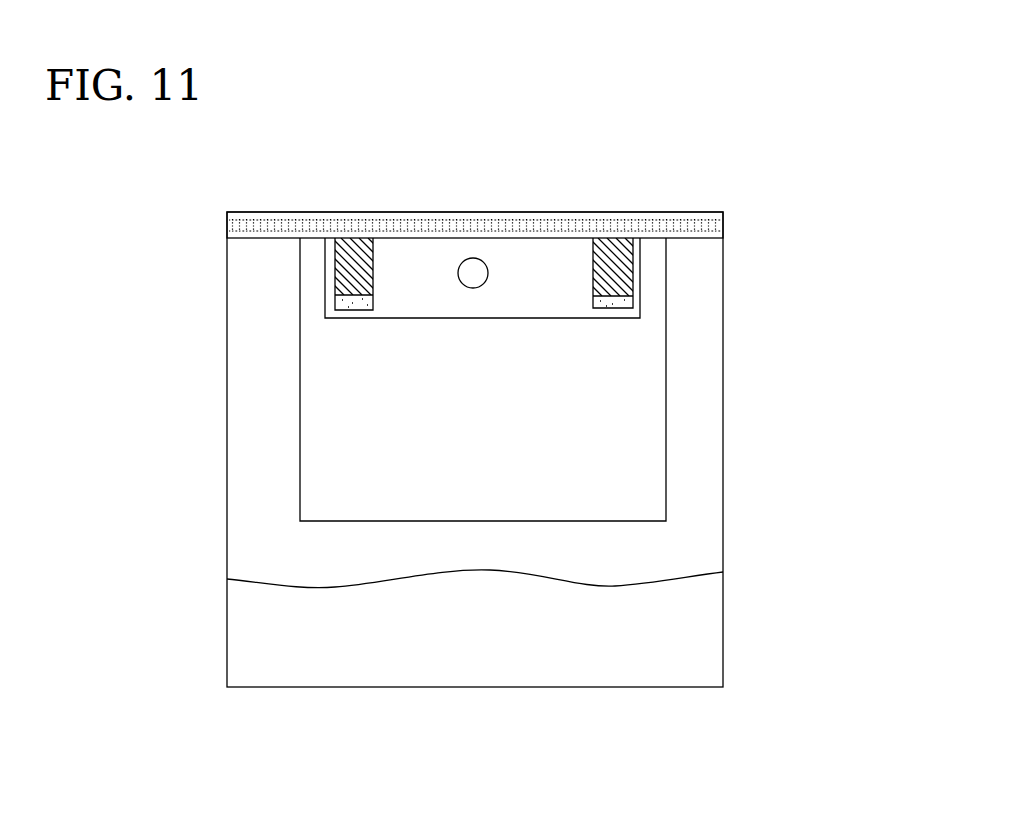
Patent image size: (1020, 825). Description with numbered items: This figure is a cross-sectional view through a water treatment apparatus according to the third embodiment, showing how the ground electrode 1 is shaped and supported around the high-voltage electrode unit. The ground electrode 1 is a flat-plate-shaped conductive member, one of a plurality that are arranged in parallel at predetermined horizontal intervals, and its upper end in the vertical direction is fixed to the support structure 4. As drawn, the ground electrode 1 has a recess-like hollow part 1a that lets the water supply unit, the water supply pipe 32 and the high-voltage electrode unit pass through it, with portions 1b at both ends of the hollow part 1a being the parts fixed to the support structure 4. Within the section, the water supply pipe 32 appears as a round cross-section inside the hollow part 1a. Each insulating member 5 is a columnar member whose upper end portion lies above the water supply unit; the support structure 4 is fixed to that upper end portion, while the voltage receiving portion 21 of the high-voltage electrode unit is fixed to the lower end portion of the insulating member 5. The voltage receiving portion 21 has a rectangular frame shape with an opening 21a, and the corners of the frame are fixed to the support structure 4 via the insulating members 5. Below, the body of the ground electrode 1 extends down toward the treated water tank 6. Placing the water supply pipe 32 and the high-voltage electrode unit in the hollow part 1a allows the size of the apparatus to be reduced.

The ground electrode 1 is at (653, 483).
The hollow part 1a is at (566, 313).
The portion fixed to the support structure 1b is at (657, 245).
The support structure 4 is at (227, 230).
The insulating member 5 is at (632, 267).
The treated water tank 6 is at (227, 625).
The voltage receiving portion 21 is at (335, 303).
The opening 21a is at (418, 300).
The water supply pipe 32 is at (460, 261).